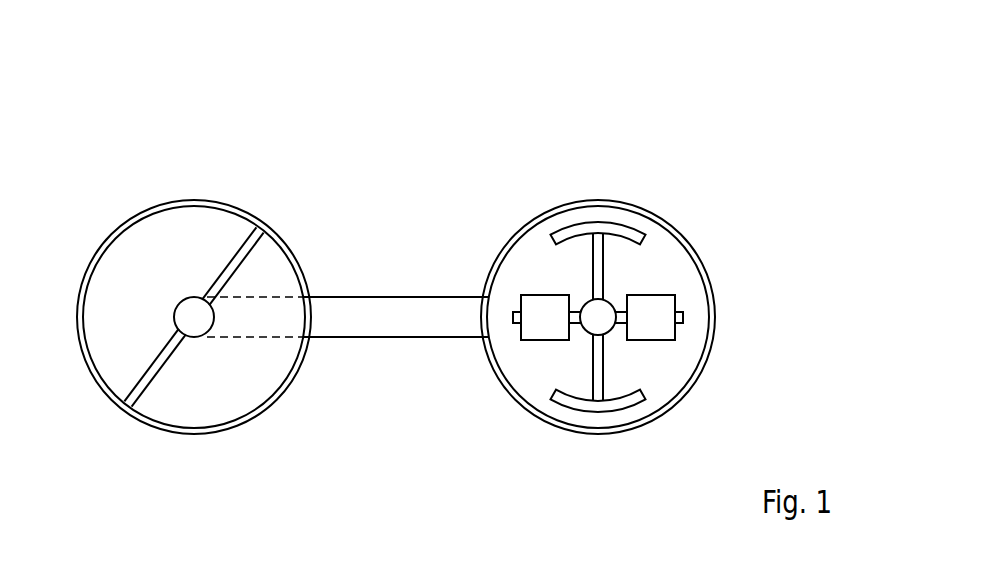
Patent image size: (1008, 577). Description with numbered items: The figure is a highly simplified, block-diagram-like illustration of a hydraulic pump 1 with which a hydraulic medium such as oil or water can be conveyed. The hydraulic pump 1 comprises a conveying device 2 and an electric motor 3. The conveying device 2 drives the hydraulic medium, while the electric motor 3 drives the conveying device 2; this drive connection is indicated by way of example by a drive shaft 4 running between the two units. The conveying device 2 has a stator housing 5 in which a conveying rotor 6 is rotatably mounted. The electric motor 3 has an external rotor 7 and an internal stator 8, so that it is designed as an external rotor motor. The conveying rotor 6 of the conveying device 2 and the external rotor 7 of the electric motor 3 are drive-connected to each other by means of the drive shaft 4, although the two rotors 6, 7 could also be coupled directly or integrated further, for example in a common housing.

The hydraulic pump 1 is at (828, 205).
The conveying device 2 is at (165, 200).
The electric motor 3 is at (628, 202).
The drive shaft 4 is at (390, 312).
The stator housing 5 is at (108, 240).
The conveying rotor 6 is at (152, 377).
The external rotor 7 is at (685, 238).
The internal stator 8 is at (600, 368).